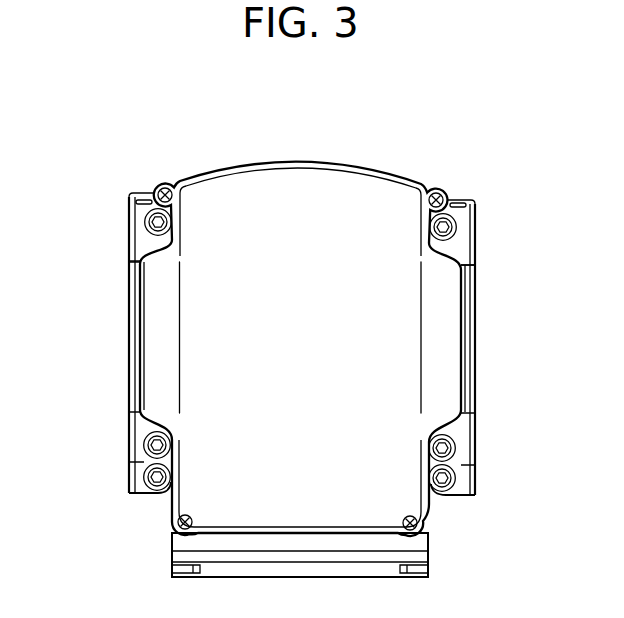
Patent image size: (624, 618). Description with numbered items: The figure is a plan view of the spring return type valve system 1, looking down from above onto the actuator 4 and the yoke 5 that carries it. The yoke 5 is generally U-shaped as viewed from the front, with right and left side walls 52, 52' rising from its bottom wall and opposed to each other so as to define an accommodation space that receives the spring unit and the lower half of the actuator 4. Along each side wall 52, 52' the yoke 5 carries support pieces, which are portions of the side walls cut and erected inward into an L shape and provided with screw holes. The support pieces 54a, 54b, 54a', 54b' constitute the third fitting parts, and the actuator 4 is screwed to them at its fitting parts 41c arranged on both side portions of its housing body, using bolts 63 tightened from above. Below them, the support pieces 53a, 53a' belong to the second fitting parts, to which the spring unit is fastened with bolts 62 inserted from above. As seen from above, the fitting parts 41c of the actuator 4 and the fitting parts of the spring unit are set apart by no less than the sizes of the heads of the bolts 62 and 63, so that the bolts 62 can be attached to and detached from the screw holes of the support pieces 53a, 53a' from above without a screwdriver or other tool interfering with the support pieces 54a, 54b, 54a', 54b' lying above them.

The spring return type valve system 1 is at (458, 162).
The actuator 4 is at (371, 192).
The yoke 5 is at (125, 340).
The fitting parts 41c is at (138, 242).
The side wall 52 is at (93, 345).
The side wall 52' is at (517, 349).
The support piece 53a is at (108, 505).
The support piece 53a' is at (498, 509).
The support piece 54a is at (94, 426).
The support piece 54a' is at (514, 427).
The support piece 54b is at (102, 186).
The support piece 54b' is at (505, 190).
The bolts 62 is at (145, 477).
The bolts 63 is at (146, 222).